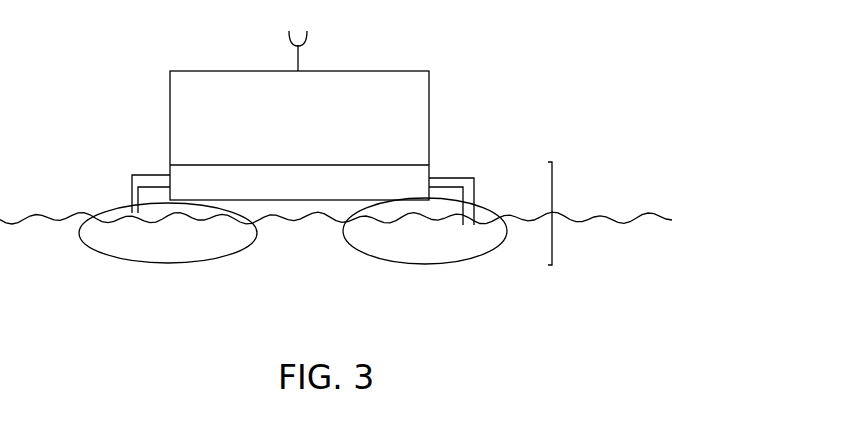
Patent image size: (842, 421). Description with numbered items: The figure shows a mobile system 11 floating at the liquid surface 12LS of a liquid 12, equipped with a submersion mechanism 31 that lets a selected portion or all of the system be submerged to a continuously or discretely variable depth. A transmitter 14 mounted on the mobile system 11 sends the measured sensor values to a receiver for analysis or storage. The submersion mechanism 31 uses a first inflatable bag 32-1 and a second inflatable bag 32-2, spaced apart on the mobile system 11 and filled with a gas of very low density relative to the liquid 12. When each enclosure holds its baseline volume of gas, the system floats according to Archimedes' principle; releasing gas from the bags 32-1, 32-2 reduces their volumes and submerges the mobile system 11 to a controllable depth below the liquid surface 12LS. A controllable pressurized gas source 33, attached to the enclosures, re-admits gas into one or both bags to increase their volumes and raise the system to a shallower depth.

The mobile system 11 is at (470, 72).
The transmitter 14 is at (303, 54).
The submersion mechanism 31 is at (126, 181).
The liquid surface 12LS is at (632, 210).
The liquid 12 is at (682, 263).
The first inflatable bag 32-1 is at (110, 245).
The second inflatable bag 32-2 is at (385, 240).
The pressurized gas source 33 is at (565, 213).